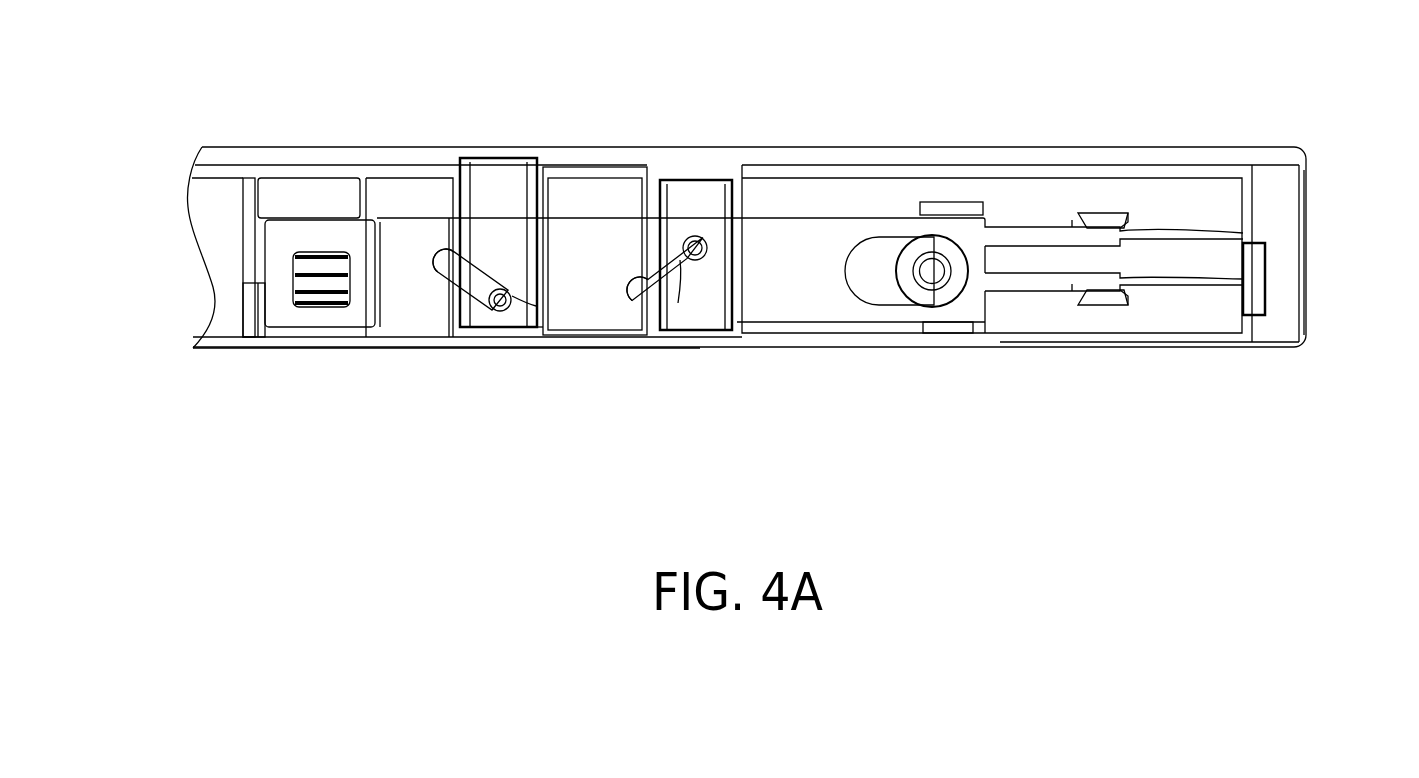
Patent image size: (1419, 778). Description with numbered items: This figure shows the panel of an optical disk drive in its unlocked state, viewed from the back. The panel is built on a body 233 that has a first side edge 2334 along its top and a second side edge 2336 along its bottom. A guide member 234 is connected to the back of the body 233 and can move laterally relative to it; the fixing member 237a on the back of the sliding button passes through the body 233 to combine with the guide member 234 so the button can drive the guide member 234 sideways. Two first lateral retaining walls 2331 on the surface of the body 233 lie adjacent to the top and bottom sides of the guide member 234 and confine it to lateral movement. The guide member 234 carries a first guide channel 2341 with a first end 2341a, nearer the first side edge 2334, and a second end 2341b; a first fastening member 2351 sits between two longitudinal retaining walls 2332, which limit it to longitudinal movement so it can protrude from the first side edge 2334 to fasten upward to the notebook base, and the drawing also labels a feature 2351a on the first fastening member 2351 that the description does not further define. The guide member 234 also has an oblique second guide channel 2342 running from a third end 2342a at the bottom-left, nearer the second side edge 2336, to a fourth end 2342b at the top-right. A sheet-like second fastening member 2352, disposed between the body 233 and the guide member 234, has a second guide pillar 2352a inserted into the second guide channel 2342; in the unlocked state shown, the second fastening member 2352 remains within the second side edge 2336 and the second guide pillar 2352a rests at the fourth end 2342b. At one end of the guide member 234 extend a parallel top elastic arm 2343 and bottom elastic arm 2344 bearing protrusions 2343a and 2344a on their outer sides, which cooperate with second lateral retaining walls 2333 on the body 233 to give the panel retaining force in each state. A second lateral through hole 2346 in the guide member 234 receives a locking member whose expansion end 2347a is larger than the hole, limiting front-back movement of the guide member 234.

The body 233 is at (1283, 194).
The first lateral retaining wall 2331 is at (940, 203).
The longitudinal retaining wall 2332 is at (462, 170).
The second lateral retaining wall 2333 is at (1116, 213).
The first side edge 2334 is at (227, 138).
The second side edge 2336 is at (232, 372).
The guide member 234 is at (300, 233).
The fixing member 237a is at (320, 305).
The first guide channel 2341 is at (434, 282).
The first end 2341a is at (437, 256).
The second end 2341b is at (503, 312).
The second guide channel 2342 is at (673, 290).
The third end 2342a is at (633, 298).
The fourth end 2342b is at (700, 305).
The top elastic arm 2343 is at (1265, 233).
The protrusion 2343a is at (1072, 213).
The bottom elastic arm 2344 is at (1265, 280).
The protrusion 2344a is at (1075, 300).
The second lateral through hole 2346 is at (903, 310).
The expansion end 2347a is at (938, 307).
The first fastening member 2351 is at (518, 177).
The slot of sliding plate 2351a is at (512, 303).
The second fastening member 2352 is at (712, 196).
The second guide pillar 2352a is at (692, 240).